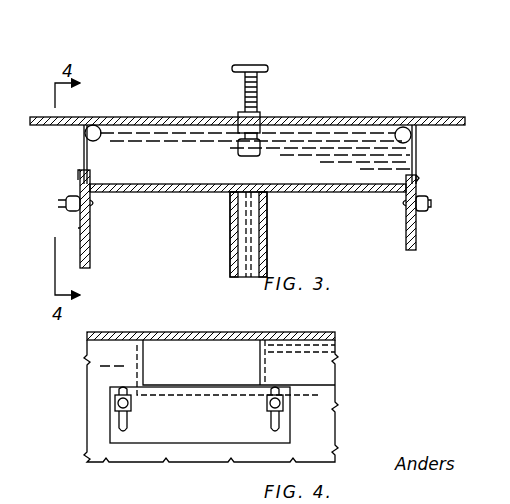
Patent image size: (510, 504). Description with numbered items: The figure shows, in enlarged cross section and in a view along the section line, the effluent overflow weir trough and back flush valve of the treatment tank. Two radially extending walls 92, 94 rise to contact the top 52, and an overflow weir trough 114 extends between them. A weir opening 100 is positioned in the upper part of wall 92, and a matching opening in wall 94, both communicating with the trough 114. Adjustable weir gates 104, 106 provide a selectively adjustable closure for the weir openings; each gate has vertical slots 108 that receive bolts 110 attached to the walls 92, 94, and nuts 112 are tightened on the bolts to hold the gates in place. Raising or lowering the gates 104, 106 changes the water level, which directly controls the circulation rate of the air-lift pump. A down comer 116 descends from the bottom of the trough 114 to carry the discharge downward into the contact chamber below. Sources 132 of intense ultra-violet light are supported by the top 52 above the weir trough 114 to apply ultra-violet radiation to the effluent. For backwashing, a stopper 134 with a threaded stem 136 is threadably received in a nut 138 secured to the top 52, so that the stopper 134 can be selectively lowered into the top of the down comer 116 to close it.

In FIG. 3, the top 52 is at (316, 118).
In FIG. 4, the top 52 is at (312, 332).
In FIG. 3, the radially extending wall 92 is at (90, 242).
In FIG. 4, the radially extending wall 92 is at (326, 388).
In FIG. 3, the radially extending wall 94 is at (406, 238).
In FIG. 4, the weir opening 100 is at (260, 362).
In FIG. 3, the adjustable weir gate 104 is at (80, 222).
In FIG. 4, the adjustable weir gate 104 is at (215, 432).
In FIG. 3, the adjustable weir gate 106 is at (416, 186).
In FIG. 4, the vertical slot 108 is at (128, 415).
In FIG. 3, the bolt 110 is at (92, 204).
In FIG. 3, the nut 112 is at (68, 198).
In FIG. 3, the overflow weir trough 114 is at (146, 184).
In FIG. 3, the down comer 116 is at (267, 222).
In FIG. 3, the source of intense ultra-violet light 132 is at (99, 127).
In FIG. 3, the stopper 134 is at (258, 140).
In FIG. 3, the threaded stem 136 is at (240, 70).
In FIG. 3, the nut 138 is at (238, 116).